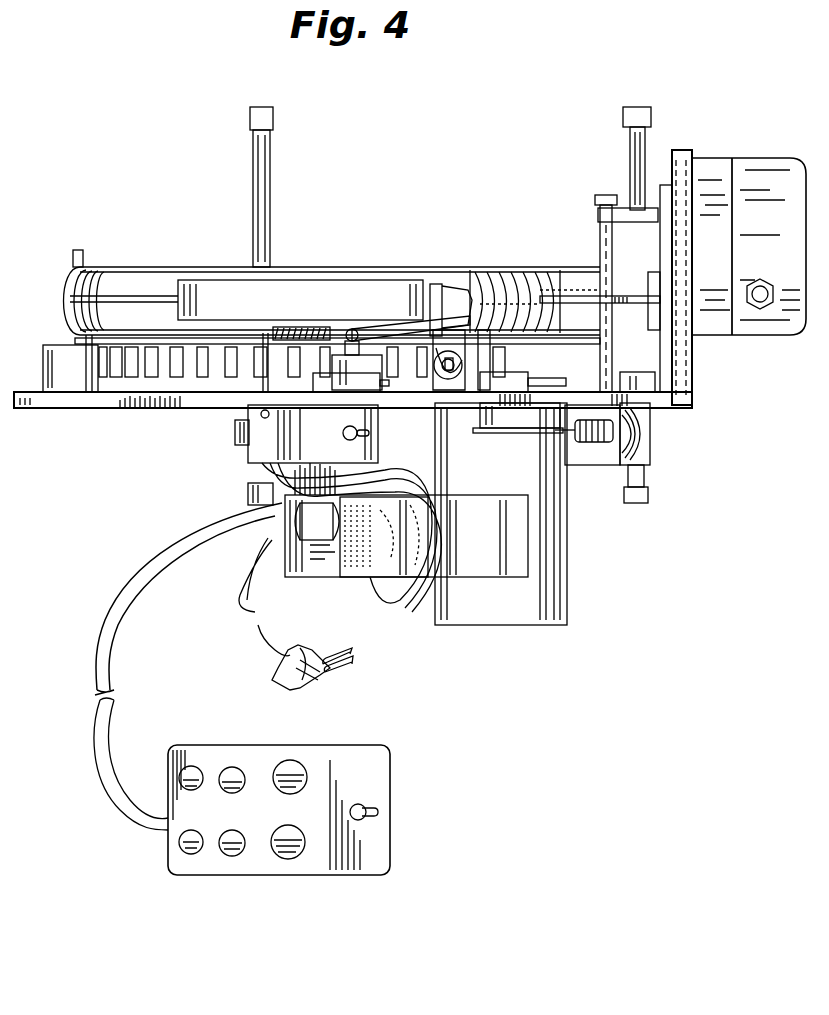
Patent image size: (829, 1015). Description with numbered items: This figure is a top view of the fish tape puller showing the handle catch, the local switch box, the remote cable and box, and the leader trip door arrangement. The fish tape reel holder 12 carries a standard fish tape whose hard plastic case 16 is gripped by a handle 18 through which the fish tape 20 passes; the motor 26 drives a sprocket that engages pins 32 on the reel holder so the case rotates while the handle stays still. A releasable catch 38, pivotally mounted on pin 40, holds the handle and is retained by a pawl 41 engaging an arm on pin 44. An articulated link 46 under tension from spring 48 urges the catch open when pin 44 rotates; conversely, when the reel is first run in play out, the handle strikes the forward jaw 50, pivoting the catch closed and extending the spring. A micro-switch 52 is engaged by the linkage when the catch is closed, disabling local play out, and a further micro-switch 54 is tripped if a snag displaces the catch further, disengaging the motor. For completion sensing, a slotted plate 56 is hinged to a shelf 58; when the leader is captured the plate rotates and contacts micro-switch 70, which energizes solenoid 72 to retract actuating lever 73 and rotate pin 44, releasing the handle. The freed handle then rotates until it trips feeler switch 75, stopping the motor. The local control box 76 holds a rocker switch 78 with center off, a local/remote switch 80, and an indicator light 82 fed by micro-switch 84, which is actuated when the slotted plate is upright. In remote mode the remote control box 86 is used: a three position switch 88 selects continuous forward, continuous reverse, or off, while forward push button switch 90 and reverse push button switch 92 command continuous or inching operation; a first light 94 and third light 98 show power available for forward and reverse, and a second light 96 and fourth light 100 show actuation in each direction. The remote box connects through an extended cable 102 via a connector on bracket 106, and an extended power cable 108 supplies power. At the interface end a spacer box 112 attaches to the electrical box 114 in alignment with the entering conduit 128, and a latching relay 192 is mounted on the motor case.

The fish tape reel holder 12 is at (118, 338).
The hard plastic case 16 is at (98, 272).
The handle 18 is at (265, 297).
The fish tape 20 is at (630, 293).
The motor 26 is at (567, 556).
The pins 32 is at (148, 357).
The releasable catch 38 is at (487, 323).
The pin 40 is at (452, 364).
The pawl 41 is at (443, 322).
The pin 44 is at (508, 377).
The articulated link 46 is at (370, 327).
The spring 48 is at (300, 328).
The forward jaw 50 is at (468, 308).
The micro-switch 52 is at (362, 368).
The micro-switch 54 is at (345, 383).
The slotted plate 56 is at (617, 240).
The shelf 58 is at (585, 222).
The micro-switch 70 is at (520, 380).
The solenoid 72 is at (610, 467).
The actuating lever 73 is at (503, 431).
The feeler switch 75 is at (43, 362).
The local control box 76 is at (247, 488).
The rocker switch 78 is at (233, 427).
The local/remote switch 80 is at (347, 435).
The indicator light 82 is at (263, 418).
The micro-switch 84 is at (642, 371).
The remote control box 86 is at (357, 877).
The three position switch 88 is at (367, 807).
The forward push button switch 90 is at (297, 760).
The reverse push button switch 92 is at (287, 863).
The first light 94 is at (192, 768).
The second light 96 is at (228, 768).
The third light 98 is at (197, 857).
The fourth light 100 is at (230, 857).
The extended cable 102 is at (103, 777).
The bracket 106 is at (307, 577).
The extended power cable 108 is at (263, 633).
The spacer box 112 is at (712, 337).
The electrical box 114 is at (770, 337).
The conduit 128 is at (757, 285).
The latching relay 192 is at (367, 577).